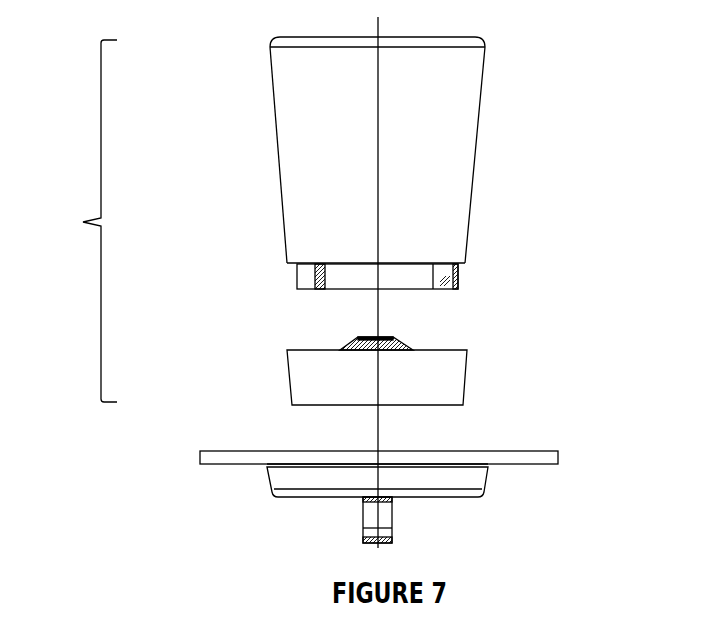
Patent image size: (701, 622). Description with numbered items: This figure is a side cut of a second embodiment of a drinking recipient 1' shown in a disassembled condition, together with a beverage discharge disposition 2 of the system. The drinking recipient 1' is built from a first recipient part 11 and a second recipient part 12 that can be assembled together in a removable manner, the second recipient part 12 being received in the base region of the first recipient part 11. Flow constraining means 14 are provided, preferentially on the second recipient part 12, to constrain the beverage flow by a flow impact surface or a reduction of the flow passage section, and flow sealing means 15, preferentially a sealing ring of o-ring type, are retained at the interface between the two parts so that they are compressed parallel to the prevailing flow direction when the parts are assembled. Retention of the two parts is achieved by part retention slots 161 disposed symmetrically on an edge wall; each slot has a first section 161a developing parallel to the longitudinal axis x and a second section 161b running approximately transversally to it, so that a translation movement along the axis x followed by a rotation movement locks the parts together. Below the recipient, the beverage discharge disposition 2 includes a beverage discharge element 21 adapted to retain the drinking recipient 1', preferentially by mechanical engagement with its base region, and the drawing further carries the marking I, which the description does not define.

The drinking recipient 1' is at (300, 221).
The first recipient part 11 is at (345, 163).
The second recipient part 12 is at (350, 377).
The flow constraining means 14 is at (378, 280).
The flow sealing means 15 is at (378, 281).
The part retention slots 161 is at (357, 338).
The first section of part retention slot 161a is at (318, 271).
The second section of part retention slot 161b is at (412, 345).
The beverage discharge disposition 2 is at (379, 458).
The beverage discharge element 21 is at (401, 520).
The longitudinal axis x is at (394, 278).
The direction indicator I is at (596, 197).